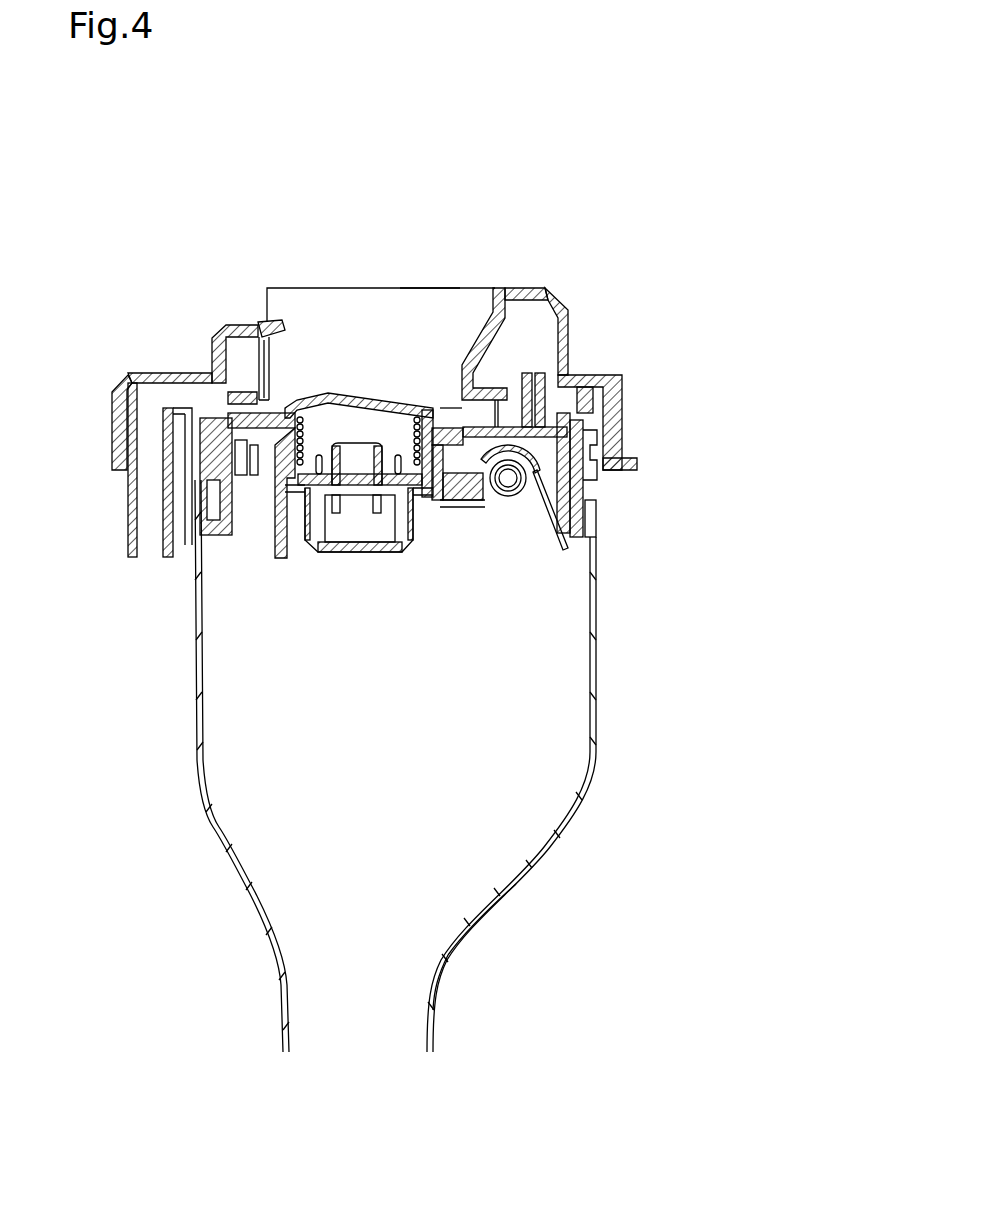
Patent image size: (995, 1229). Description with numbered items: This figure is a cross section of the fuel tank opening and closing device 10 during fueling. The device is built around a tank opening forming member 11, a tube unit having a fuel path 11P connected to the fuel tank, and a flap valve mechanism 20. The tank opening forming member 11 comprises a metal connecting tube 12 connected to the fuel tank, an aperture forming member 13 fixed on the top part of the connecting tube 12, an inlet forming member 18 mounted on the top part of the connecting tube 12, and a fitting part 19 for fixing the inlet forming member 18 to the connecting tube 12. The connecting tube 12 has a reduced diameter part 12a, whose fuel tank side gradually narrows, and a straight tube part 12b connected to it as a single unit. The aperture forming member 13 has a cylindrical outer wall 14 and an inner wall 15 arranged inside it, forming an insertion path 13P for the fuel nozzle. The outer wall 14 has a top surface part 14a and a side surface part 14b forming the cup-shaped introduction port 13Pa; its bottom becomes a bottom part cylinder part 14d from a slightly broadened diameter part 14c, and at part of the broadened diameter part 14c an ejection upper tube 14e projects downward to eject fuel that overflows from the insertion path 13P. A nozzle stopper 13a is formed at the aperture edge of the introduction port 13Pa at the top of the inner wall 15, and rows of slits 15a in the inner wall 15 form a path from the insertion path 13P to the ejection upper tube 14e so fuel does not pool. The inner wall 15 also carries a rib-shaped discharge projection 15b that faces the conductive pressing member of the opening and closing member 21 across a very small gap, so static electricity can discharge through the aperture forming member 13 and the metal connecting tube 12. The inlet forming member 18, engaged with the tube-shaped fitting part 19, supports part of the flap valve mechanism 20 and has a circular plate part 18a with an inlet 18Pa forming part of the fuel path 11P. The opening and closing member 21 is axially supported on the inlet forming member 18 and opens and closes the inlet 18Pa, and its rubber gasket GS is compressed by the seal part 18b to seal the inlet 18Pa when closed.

The fuel tank opening and closing device 10 is at (606, 190).
The tank opening forming member 11 is at (717, 398).
The fuel path 11P is at (437, 784).
The connecting tube 12 is at (596, 754).
The reduced diameter part 12a is at (516, 884).
The straight tube part 12b is at (437, 1005).
The aperture forming member 13 is at (622, 418).
The insertion path 13P is at (405, 342).
The introduction port 13Pa is at (428, 288).
The nozzle stopper 13a is at (282, 343).
The outer wall 14 is at (674, 224).
The top surface part 14a is at (536, 290).
The side surface part 14b is at (564, 322).
The broadened diameter part 14c is at (600, 360).
The bottom part cylinder part 14d is at (614, 380).
The ejection upper tube 14e is at (112, 440).
The inner wall 15 is at (492, 312).
The slit 15a is at (262, 327).
The discharge projection 15b is at (260, 368).
The inlet forming member 18 is at (592, 474).
The circular plate part 18a is at (492, 493).
The seal part 18b is at (453, 507).
The inlet 18Pa is at (440, 410).
The fitting part 19 is at (593, 537).
The flap valve mechanism 20 is at (262, 412).
The opening and closing member 21 is at (338, 395).
The gasket GS is at (258, 472).